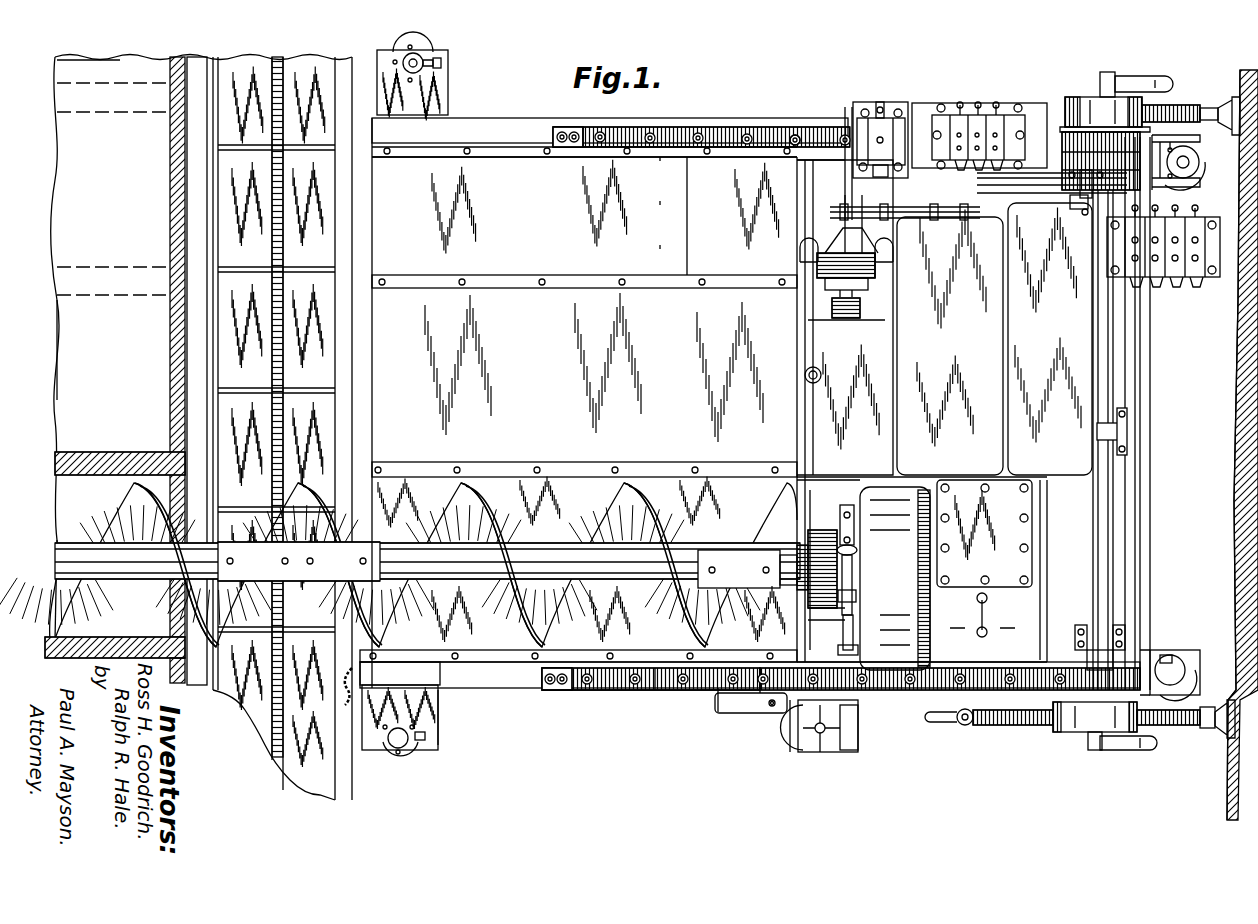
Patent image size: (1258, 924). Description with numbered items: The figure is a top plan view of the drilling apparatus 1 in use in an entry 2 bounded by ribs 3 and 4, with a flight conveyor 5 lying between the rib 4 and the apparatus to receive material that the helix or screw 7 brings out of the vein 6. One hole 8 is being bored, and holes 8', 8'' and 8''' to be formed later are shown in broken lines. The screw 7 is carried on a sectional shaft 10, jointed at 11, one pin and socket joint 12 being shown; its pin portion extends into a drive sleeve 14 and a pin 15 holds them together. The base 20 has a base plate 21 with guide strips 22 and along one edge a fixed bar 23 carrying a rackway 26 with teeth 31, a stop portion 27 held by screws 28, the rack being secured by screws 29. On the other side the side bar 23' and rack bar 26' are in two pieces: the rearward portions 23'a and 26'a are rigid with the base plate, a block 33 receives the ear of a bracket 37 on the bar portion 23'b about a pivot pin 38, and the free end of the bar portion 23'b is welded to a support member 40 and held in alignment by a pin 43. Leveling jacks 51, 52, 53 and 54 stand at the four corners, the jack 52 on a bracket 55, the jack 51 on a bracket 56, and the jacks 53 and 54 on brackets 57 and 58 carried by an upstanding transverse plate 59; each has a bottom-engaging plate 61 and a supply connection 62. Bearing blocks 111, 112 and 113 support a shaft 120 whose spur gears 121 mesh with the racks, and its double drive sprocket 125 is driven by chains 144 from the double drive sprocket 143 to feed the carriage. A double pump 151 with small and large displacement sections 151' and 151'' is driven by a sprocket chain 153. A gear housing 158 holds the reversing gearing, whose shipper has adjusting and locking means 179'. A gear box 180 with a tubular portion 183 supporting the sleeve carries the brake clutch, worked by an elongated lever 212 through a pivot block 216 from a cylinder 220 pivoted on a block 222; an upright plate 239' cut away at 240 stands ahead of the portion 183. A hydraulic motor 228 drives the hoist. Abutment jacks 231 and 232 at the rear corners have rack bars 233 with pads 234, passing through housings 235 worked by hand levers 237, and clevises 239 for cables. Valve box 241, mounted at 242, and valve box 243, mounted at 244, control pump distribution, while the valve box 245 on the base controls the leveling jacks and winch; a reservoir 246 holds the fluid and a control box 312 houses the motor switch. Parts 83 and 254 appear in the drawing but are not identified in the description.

The drilling apparatus 1 is at (506, 655).
The entry 2 is at (1165, 470).
The rib 3 is at (1235, 522).
The rib 4 is at (185, 653).
The conveyor 5 is at (297, 75).
The vein 6 is at (190, 70).
The helix or screw 7 is at (660, 690).
The hole or bore 8 is at (201, 348).
The hole 8' is at (77, 540).
The hole 8'' is at (84, 350).
The hole 8''' is at (88, 56).
The sectional shaft 10 is at (606, 570).
The joint 11 is at (297, 610).
The pin and socket joint 12 is at (790, 590).
The drive sleeve 14 is at (790, 600).
The pin 15 is at (740, 595).
The base 20 is at (610, 437).
The base plate 21 is at (645, 160).
The guide strips 22 is at (686, 477).
The bar 23 is at (610, 125).
The side bar 23' is at (750, 687).
The rearward bar portion 23'a is at (922, 699).
The swinging bar portion 23'b is at (651, 718).
The rackway 26 is at (701, 118).
The rack bar 26' is at (651, 705).
The rearward rack portion 26'a is at (949, 717).
The stop portion 27 is at (570, 688).
The screws 28 is at (562, 672).
The screws 29 is at (1010, 690).
The teeth 31 is at (968, 725).
The block 33 is at (757, 705).
The bracket 37 is at (720, 705).
The pivot pin 38 is at (772, 710).
The support member 40 is at (405, 672).
The pin 43 is at (352, 670).
The leveling jack 51 is at (420, 752).
The leveling jack 52 is at (420, 66).
The leveling jack 53 is at (1182, 165).
The leveling jack 54 is at (1175, 655).
The bracket 55 is at (440, 68).
The bracket 56 is at (430, 720).
The bracket 57 is at (1160, 190).
The bracket 58 is at (1150, 650).
The upstanding transverse plate 59 is at (1150, 375).
The bottom-engaging plates 61 is at (1195, 660).
The supply connection 62 is at (1172, 668).
The column 83 is at (845, 112).
The bearing block 111 is at (1085, 658).
The bearing block 112 is at (1128, 430).
The double bearing block 113 is at (1095, 180).
The shaft 120 is at (1095, 580).
The spur gears 121 is at (1105, 135).
The double drive sprocket 125 is at (1070, 205).
The double drive sprocket 143 is at (1000, 195).
The chains 144 is at (1035, 190).
The hydraulic pump 151 is at (826, 274).
The small displacement section 151' is at (885, 308).
The large displacement section 151'' is at (909, 255).
The sprocket chain 153 is at (895, 184).
The gear housing 158 is at (1035, 575).
The adjusting and locking means 179' is at (982, 625).
The gear box 180 is at (915, 492).
The tubular portion 183 is at (825, 608).
The elongated lever 212 is at (860, 640).
The pivot block 216 is at (858, 585).
The cylinder 220 is at (855, 555).
The block 222 is at (850, 497).
The hydraulic driving motor 228 is at (810, 740).
The abutment jack 231 is at (1175, 730).
The abutment jack 232 is at (1195, 108).
The rack bars 233 is at (1012, 735).
The abutment pads 234 is at (1235, 735).
The housings 235 is at (1073, 740).
The hand lever 237 is at (1120, 752).
The clevises 239 is at (990, 748).
The upright plate 239' is at (761, 742).
The cutaway 240 is at (812, 545).
The valve box 241 is at (866, 120).
The mounting 242 is at (895, 110).
The valve box 243 is at (968, 115).
The mounting 244 is at (1020, 112).
The valve box 245 is at (1185, 260).
The reservoir 246 is at (800, 446).
The valve stem 254 is at (882, 105).
The control box 312 is at (1065, 350).